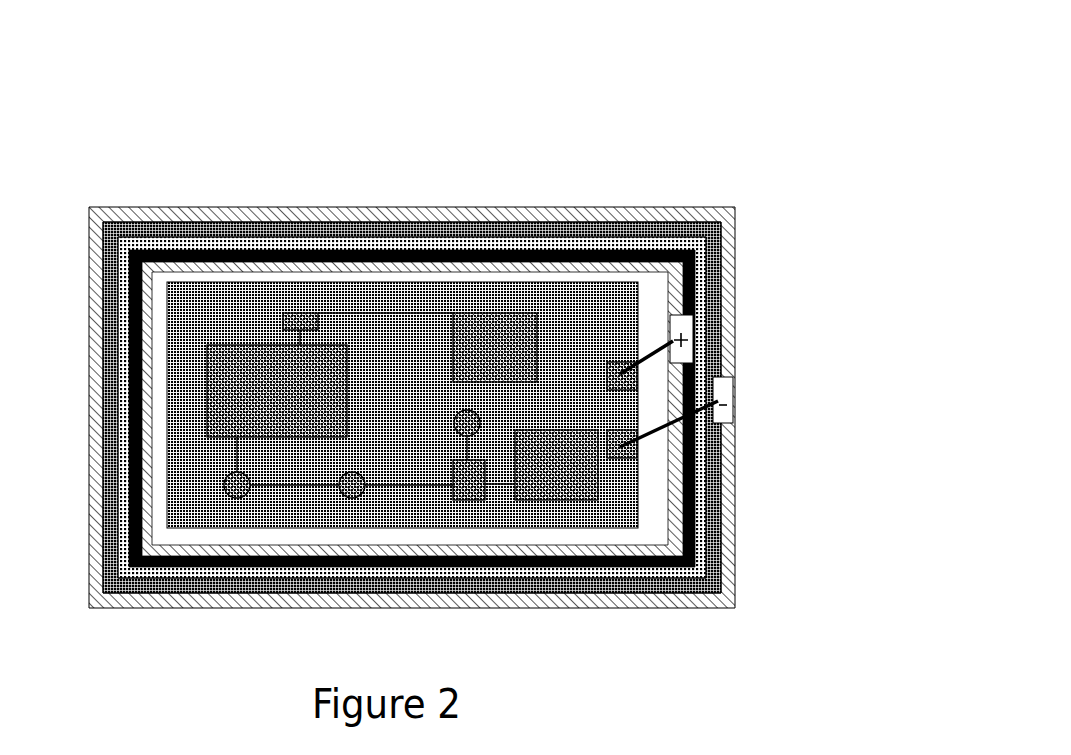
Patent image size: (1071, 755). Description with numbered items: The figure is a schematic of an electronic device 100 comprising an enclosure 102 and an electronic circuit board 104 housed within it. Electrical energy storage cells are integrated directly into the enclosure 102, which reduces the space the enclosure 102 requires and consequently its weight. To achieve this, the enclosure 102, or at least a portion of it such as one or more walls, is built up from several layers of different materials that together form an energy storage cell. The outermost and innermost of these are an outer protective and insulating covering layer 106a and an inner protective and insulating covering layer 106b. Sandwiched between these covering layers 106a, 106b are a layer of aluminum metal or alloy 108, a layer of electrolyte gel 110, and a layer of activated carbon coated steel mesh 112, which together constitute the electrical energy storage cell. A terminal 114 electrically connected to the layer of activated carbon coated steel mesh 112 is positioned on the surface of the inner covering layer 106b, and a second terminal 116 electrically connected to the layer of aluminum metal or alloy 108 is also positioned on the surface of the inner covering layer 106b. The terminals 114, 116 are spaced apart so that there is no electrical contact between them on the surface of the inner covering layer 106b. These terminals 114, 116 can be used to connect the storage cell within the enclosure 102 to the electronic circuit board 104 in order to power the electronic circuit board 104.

The electronic device 100 is at (170, 119).
The enclosure 102 is at (723, 202).
The electronic circuit board 104 is at (518, 533).
The outer protective and insulating covering layer 106a is at (520, 204).
The inner protective and insulating covering layer 106b is at (540, 271).
The layer of aluminum metal or alloy 108 is at (117, 216).
The layer of electrolyte gel 110 is at (215, 244).
The layer of activated carbon coated steel mesh 112 is at (382, 251).
The terminal 114 is at (695, 317).
The terminal 116 is at (727, 384).